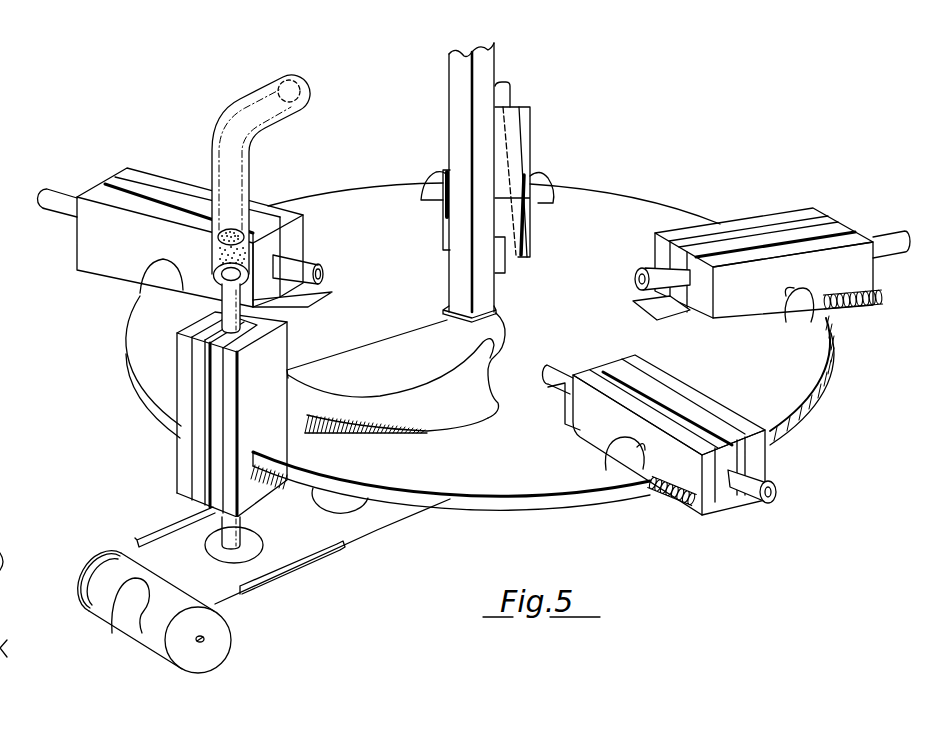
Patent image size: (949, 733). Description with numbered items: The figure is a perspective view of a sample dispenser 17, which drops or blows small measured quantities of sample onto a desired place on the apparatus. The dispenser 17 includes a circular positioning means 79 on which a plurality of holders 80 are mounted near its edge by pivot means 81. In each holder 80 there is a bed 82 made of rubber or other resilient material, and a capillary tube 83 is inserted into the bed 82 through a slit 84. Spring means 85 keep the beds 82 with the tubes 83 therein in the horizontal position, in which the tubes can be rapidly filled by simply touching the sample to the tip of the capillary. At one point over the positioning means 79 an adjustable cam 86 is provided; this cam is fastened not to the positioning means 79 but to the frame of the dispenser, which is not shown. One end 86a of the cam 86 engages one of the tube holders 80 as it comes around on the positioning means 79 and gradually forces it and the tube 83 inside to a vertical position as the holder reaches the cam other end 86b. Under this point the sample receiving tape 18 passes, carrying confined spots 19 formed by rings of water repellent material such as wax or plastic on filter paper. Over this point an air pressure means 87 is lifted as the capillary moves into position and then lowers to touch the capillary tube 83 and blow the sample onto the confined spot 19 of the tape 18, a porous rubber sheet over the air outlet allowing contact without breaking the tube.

The dispenser 17 is at (617, 207).
The sample receiving tape 18 is at (217, 600).
The confined spots 19 is at (145, 587).
The circular positioning means 79 is at (791, 408).
The holders 80 is at (869, 278).
The pivot means 81 is at (610, 459).
The bed 82 is at (620, 370).
The capillary tube 83 is at (780, 494).
The slit 84 is at (838, 227).
The spring means 85 is at (668, 494).
The adjustable cam 86 is at (435, 421).
The cam end 86a is at (486, 411).
The cam other end 86b is at (300, 363).
The air pressure means 87 is at (231, 110).